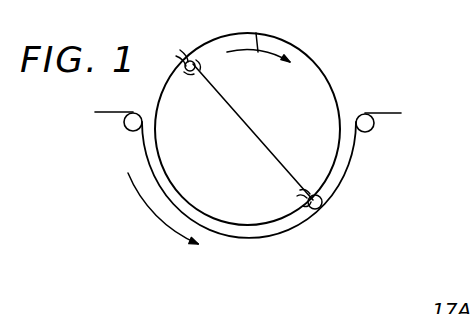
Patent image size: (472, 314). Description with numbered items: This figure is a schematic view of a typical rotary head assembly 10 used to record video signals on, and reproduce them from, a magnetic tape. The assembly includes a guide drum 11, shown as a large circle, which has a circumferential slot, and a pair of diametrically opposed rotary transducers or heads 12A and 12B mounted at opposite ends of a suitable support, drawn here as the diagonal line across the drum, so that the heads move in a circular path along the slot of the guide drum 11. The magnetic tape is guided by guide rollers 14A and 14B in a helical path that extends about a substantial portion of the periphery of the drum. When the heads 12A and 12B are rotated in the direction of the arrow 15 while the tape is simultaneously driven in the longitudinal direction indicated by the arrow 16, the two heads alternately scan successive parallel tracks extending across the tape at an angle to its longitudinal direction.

The rotary head assembly 10 is at (318, 48).
The guide drum 11 is at (324, 72).
The rotary transducer or head 12A is at (203, 32).
The rotary transducer or head 12B is at (313, 211).
The guide roller 14A is at (132, 133).
The guide roller 14B is at (372, 131).
The arrow indicating head rotation direction 15 is at (259, 40).
The arrow indicating tape drive direction 16 is at (164, 225).